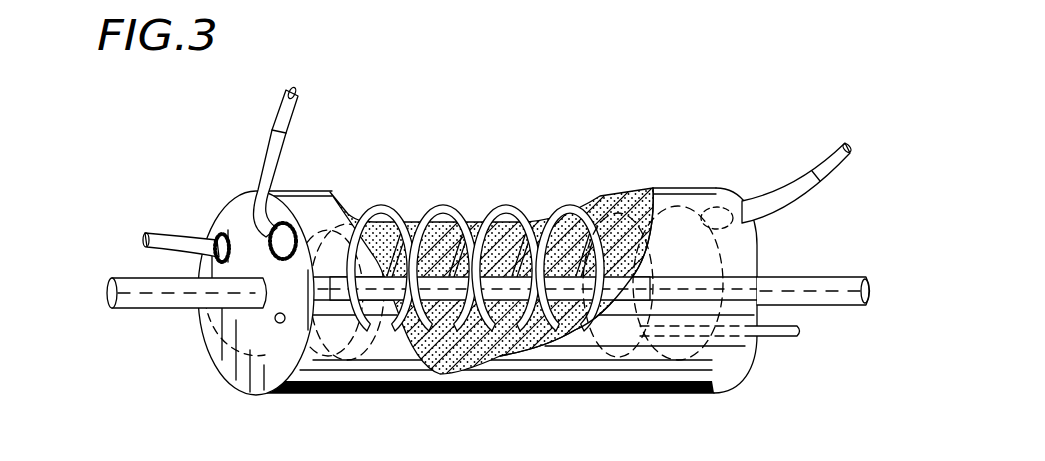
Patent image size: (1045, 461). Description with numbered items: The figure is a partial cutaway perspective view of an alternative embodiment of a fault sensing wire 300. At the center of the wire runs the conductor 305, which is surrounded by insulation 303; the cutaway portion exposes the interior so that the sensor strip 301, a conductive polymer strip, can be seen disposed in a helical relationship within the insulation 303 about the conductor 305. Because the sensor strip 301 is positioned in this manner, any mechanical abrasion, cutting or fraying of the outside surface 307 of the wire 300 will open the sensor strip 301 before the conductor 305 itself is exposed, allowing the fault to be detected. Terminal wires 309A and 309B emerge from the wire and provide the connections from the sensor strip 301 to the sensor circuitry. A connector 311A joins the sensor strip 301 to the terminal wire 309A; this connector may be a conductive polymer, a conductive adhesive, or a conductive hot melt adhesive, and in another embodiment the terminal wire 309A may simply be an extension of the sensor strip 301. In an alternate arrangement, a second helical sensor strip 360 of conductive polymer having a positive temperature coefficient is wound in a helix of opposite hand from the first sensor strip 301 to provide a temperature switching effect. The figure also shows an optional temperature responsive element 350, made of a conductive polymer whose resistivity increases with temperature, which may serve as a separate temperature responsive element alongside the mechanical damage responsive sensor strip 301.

The fault sensing wire 300 is at (323, 158).
The sensor strip 301 is at (504, 204).
The insulation 303 is at (635, 190).
The conductor 305 is at (150, 310).
The outside surface 307 is at (677, 188).
The terminal wire 309A is at (270, 140).
The terminal wire 309B is at (762, 203).
The connector 311A is at (230, 214).
The temperature responsive element 350 is at (773, 340).
The second helical sensor strip 360 is at (177, 234).